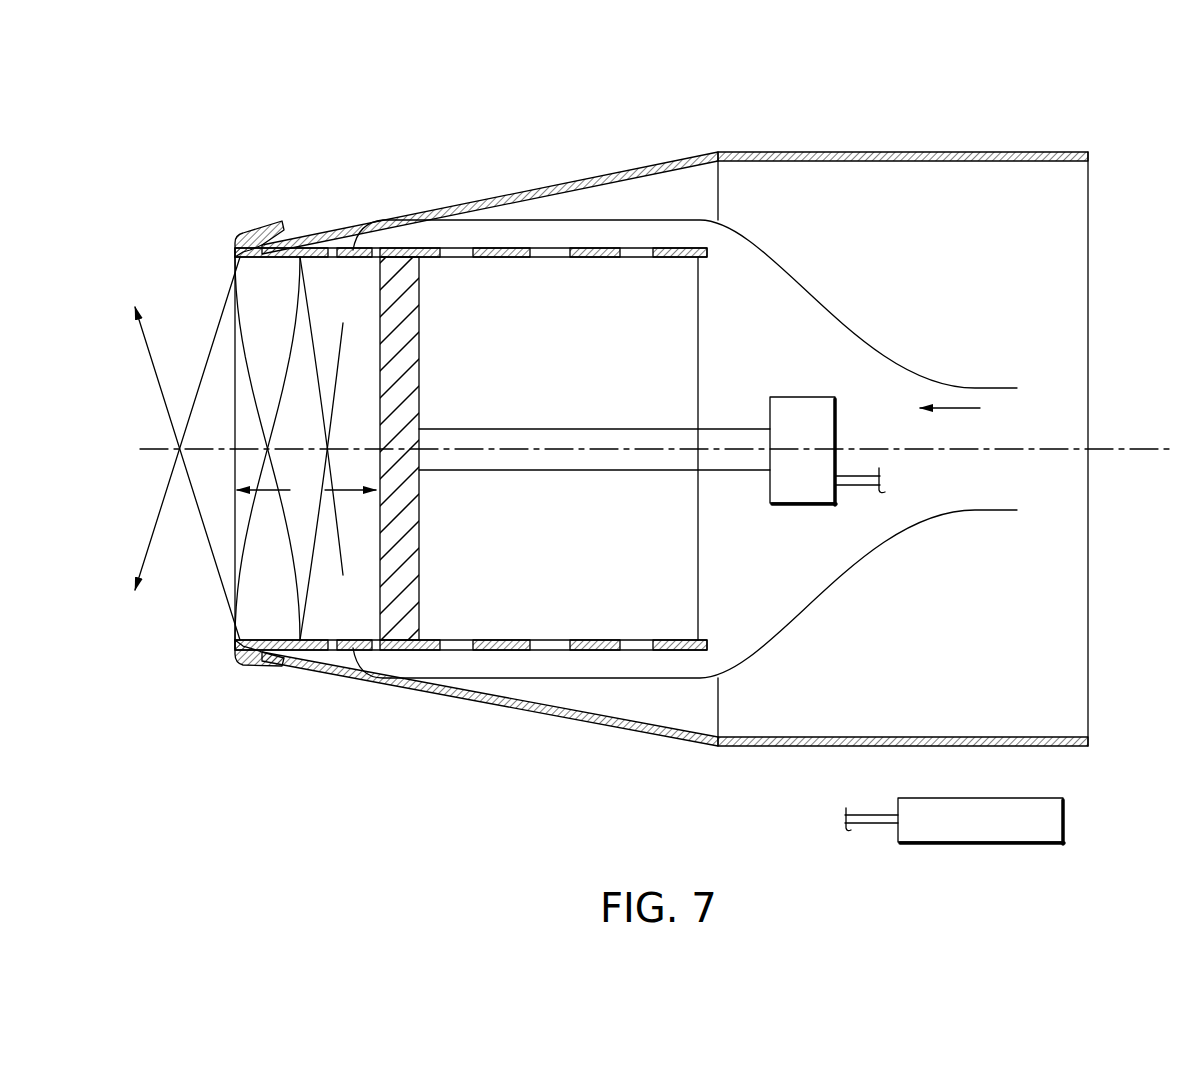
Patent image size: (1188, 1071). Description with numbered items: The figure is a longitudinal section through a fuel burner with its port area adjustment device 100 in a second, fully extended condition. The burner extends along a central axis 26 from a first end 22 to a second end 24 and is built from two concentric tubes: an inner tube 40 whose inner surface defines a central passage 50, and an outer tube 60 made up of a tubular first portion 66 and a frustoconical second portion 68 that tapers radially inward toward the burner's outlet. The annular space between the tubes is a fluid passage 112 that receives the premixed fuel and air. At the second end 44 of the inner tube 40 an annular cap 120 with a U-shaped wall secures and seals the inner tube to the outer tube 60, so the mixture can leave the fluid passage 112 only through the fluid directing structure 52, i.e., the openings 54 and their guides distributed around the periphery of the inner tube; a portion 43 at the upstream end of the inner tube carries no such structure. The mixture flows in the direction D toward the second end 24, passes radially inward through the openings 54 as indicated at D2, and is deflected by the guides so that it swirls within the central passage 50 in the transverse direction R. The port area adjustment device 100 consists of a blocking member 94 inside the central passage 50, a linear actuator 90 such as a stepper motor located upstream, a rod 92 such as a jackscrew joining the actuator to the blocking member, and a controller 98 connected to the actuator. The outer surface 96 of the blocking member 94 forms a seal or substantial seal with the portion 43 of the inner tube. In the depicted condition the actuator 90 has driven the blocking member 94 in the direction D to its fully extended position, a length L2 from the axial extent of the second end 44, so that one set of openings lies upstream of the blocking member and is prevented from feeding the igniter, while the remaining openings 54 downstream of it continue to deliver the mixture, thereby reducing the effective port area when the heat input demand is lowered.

The first end 22 is at (1088, 750).
The second end 24 is at (230, 454).
The central axis 26 is at (1136, 458).
The inner tube 40 is at (403, 658).
The portion of the first end of the inner tube 43 is at (684, 247).
The second end of the inner tube 44 is at (284, 676).
The central passage 50 is at (648, 532).
The fluid directing structure 52 is at (493, 464).
The openings 54 is at (493, 464).
The outer tube 60 is at (916, 451).
The first portion of the outer tube 66 is at (925, 152).
The second portion of the outer tube 68 is at (549, 187).
The linear actuator 90 is at (802, 505).
The rod 92 is at (560, 428).
The blocking member 94 is at (419, 360).
The outer surface of the blocking member 96 is at (410, 247).
The controller 98 is at (979, 843).
The port area adjustment device 100 is at (560, 431).
The fluid passage 112 is at (585, 210).
The cap 120 is at (246, 223).
The direction D is at (964, 408).
The direction D2 is at (348, 288).
The length L2 is at (306, 490).
The direction R is at (218, 340).